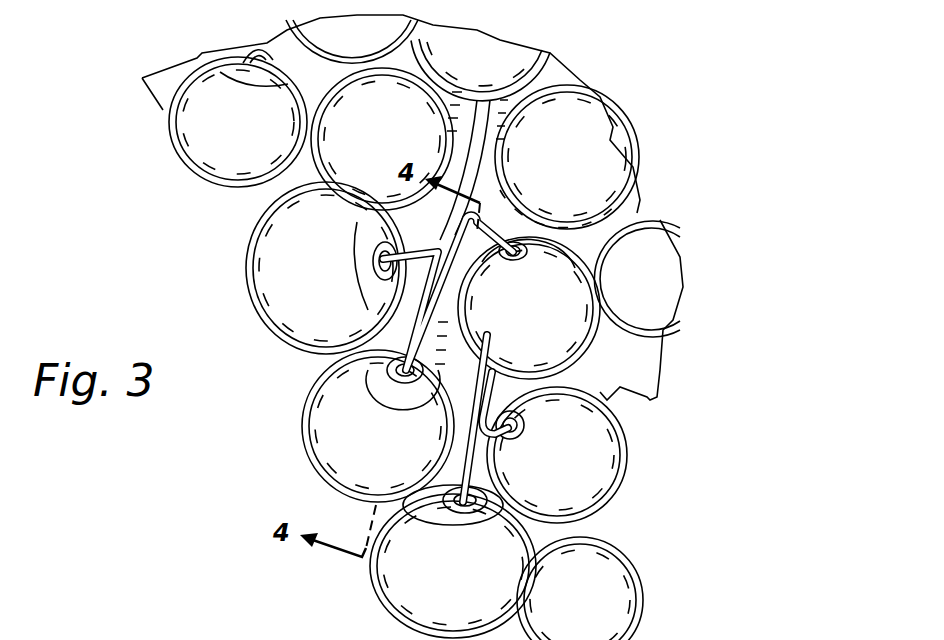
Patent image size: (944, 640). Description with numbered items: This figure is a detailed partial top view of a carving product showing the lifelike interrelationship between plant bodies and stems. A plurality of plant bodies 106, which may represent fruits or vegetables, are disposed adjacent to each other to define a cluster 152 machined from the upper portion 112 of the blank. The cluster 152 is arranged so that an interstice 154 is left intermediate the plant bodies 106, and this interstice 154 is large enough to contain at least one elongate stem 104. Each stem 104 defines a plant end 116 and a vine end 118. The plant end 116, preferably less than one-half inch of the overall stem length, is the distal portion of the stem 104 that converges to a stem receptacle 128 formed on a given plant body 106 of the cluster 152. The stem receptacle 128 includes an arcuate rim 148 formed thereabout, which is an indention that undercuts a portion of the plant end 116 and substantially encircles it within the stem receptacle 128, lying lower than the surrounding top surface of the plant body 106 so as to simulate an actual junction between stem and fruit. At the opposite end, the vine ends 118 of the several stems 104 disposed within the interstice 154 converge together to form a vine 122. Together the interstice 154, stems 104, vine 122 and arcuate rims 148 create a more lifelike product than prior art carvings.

The cluster 152 is at (738, 176).
The upper portion 112 is at (193, 151).
The vine 122 is at (482, 177).
The interstice 154 is at (568, 224).
The plant body 106 is at (270, 258).
The plant end 116 is at (400, 340).
The stem receptacle 128 is at (380, 374).
The vine end 118 is at (387, 293).
The arcuate rim 148 is at (430, 385).
The stem 104 is at (417, 323).